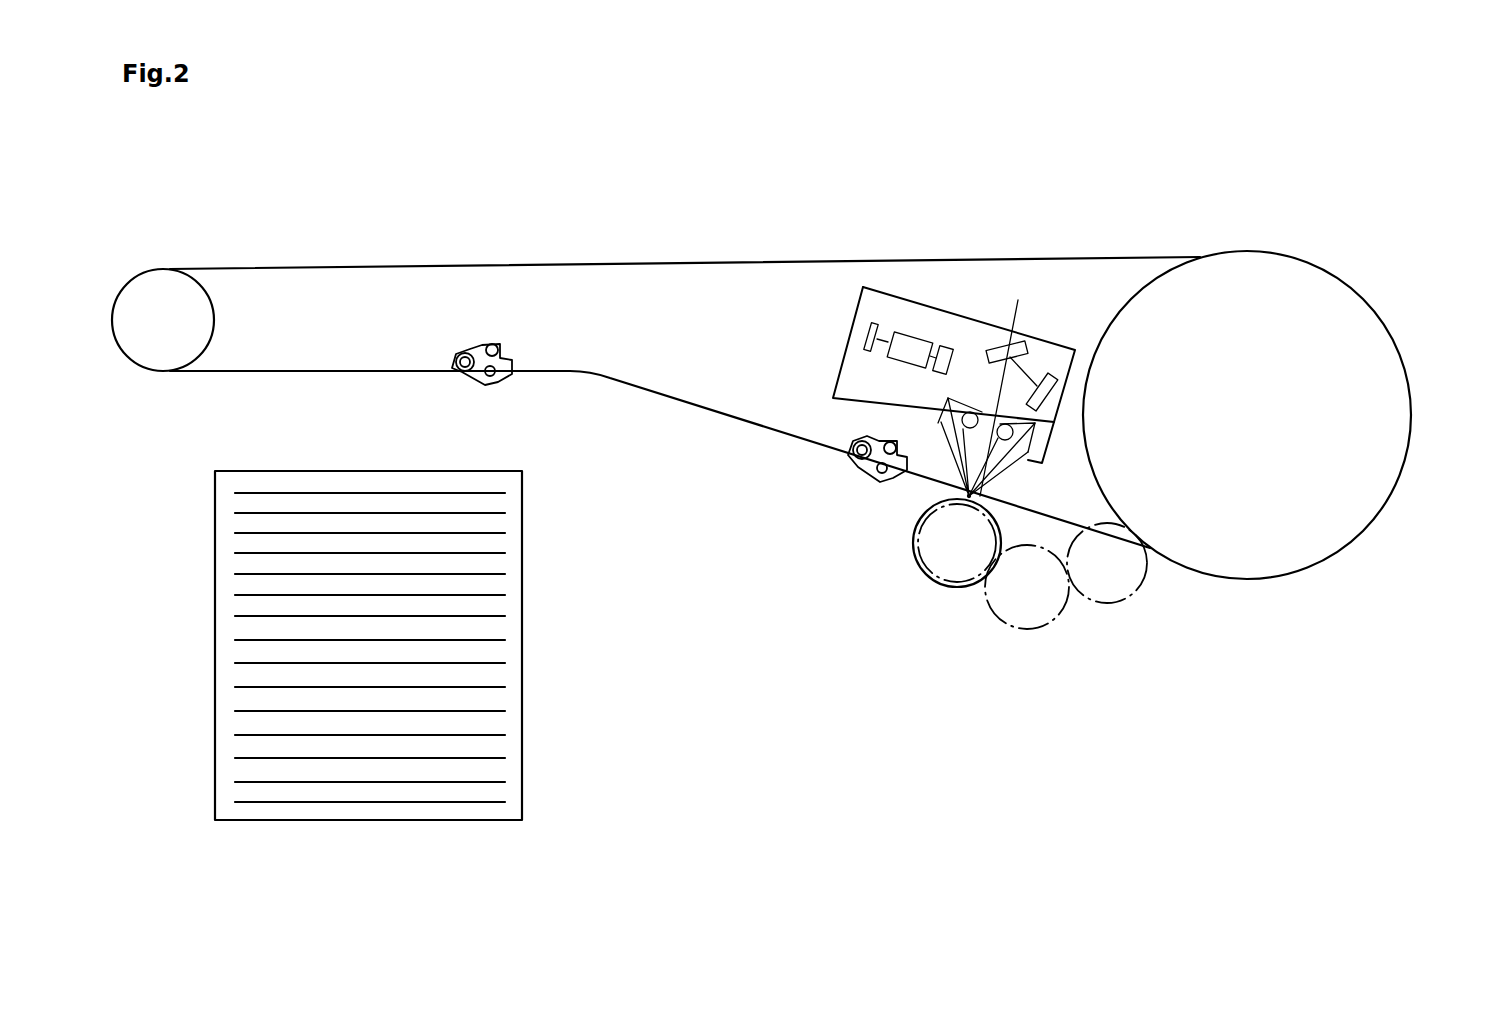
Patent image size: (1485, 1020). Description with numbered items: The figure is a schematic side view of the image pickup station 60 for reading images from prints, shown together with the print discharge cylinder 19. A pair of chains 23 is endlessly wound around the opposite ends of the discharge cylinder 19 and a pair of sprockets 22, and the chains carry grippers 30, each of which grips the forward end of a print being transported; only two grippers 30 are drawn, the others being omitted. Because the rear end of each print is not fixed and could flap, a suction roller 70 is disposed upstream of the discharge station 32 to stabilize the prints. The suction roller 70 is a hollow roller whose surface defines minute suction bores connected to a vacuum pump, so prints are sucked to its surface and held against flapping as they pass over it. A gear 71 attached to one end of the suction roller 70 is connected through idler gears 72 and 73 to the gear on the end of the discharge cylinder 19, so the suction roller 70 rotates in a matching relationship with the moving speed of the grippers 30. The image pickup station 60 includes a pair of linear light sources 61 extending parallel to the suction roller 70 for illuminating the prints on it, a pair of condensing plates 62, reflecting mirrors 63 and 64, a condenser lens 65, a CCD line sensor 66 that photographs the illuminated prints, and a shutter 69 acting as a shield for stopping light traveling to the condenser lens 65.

The discharge cylinder 19 is at (1243, 270).
The sprockets 22 is at (160, 292).
The chains 23 is at (790, 264).
The grippers 30 is at (500, 375).
The discharge station 32 is at (512, 605).
The image pickup station 60 is at (924, 396).
The linear light sources 61 is at (967, 497).
The condensing plates 62 is at (945, 399).
The reflecting mirror 63 is at (1052, 380).
The reflecting mirror 64 is at (1012, 340).
The condenser lens 65 is at (918, 342).
The CCD line sensor 66 is at (882, 322).
The shutter 69 is at (1018, 300).
The suction roller 70 is at (935, 585).
The gear 71 is at (968, 590).
The idler gear 72 is at (1023, 630).
The idler gear 73 is at (1110, 607).